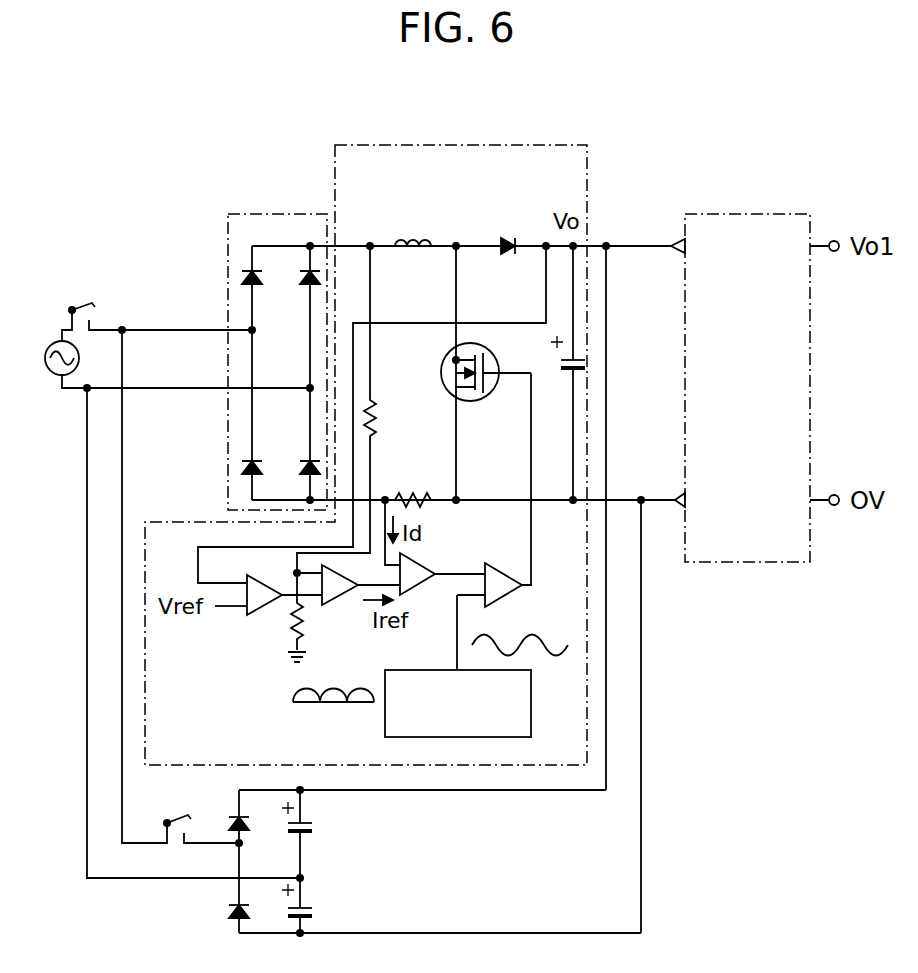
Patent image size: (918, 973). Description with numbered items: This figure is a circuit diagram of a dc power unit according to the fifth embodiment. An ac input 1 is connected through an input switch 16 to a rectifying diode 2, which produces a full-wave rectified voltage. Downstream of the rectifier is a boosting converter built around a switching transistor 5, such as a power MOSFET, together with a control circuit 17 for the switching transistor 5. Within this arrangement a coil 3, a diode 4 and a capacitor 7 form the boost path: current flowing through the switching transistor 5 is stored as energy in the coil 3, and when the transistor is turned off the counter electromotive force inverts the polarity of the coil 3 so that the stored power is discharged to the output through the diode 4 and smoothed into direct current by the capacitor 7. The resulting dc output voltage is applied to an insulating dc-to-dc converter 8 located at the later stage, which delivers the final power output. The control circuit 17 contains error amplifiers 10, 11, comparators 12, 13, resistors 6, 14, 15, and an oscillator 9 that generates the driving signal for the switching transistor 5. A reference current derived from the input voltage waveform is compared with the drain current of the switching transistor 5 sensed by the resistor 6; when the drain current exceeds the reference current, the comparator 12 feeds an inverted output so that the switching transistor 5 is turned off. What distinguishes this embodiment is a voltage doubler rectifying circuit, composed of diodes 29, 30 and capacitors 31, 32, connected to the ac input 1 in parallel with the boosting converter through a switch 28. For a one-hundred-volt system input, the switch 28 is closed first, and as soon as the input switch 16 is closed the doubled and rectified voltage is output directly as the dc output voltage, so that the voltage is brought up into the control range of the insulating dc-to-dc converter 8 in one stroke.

The ac input 1 is at (55, 375).
The rectifying diode 2 is at (285, 214).
The coil 3 is at (410, 240).
The diode 4 is at (508, 240).
The switching transistor 5 is at (455, 359).
The resistor 6 is at (412, 498).
The capacitor 7 is at (566, 377).
The insulating dc-to-dc converter 8 is at (752, 214).
The oscillator 9 is at (385, 722).
The error amplifier 10 is at (238, 612).
The error amplifier 11 is at (334, 610).
The comparator 12 is at (420, 594).
The comparator 13 is at (490, 568).
The resistor 14 is at (378, 420).
The resistor 15 is at (291, 642).
The input switch 16 is at (92, 303).
The control circuit 17 is at (590, 162).
The switch 28 is at (186, 815).
The diode 29 is at (236, 817).
The diode 30 is at (232, 910).
The capacitor 31 is at (314, 826).
The capacitor 32 is at (314, 912).